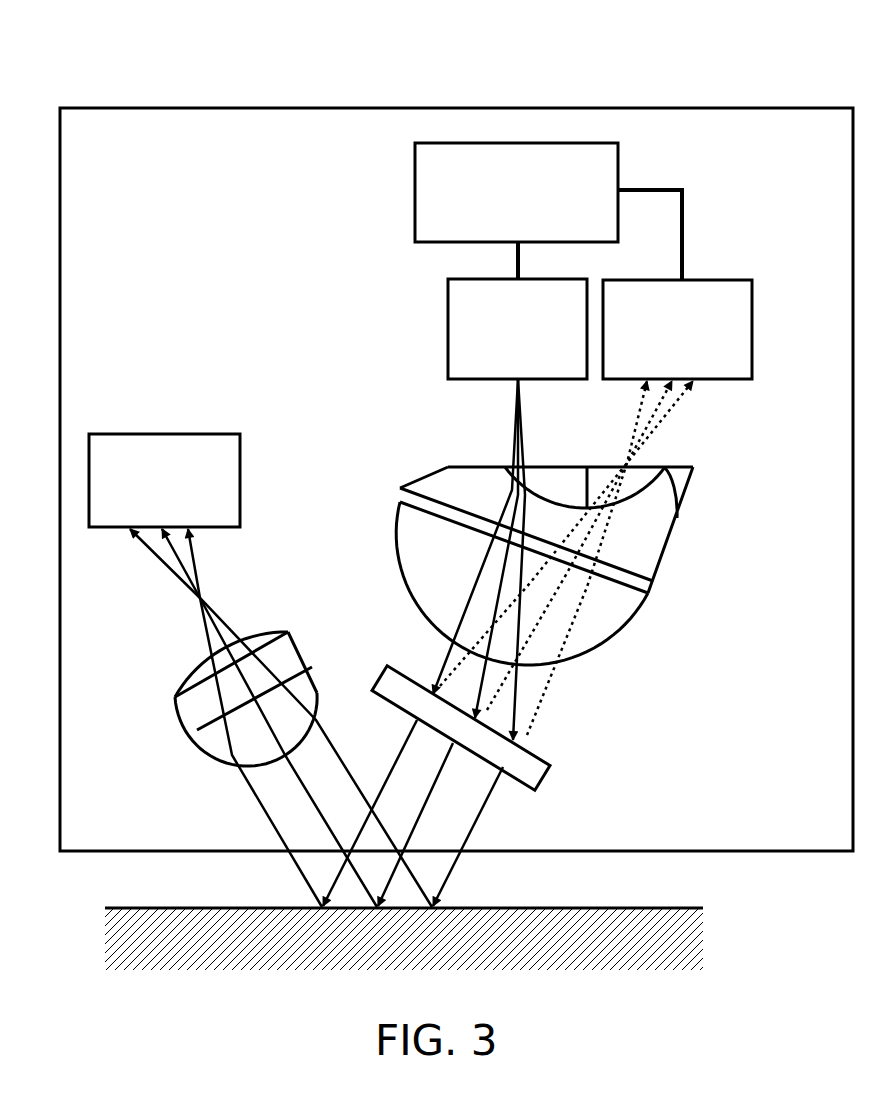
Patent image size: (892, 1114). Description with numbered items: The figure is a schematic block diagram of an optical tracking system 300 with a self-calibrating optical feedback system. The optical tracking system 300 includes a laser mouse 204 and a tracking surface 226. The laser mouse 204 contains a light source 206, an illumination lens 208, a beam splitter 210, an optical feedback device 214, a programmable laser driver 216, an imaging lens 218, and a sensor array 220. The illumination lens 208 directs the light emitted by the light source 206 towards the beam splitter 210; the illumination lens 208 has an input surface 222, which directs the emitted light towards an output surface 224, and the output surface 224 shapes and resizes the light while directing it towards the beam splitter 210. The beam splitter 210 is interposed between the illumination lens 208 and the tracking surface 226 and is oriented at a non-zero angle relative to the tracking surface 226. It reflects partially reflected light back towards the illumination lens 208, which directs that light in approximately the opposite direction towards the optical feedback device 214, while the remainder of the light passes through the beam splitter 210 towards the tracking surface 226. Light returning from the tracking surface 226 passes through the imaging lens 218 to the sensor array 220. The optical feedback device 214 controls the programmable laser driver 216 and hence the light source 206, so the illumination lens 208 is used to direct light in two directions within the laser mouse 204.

The optical tracking system 300 is at (200, 46).
The laser mouse 204 is at (422, 108).
The programmable laser driver 216 is at (415, 184).
The light source 206 is at (448, 317).
The optical feedback device 214 is at (752, 318).
The sensor array 220 is at (240, 452).
The illumination lens 208 is at (400, 489).
The input surface 222 is at (676, 515).
The output surface 224 is at (603, 648).
The imaging lens 218 is at (186, 714).
The beam splitter 210 is at (550, 770).
The tracking surface 226 is at (682, 898).